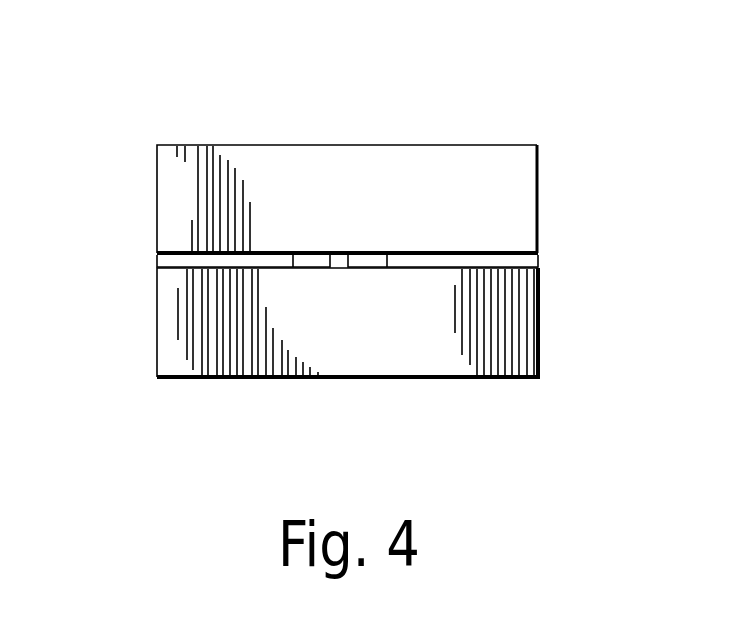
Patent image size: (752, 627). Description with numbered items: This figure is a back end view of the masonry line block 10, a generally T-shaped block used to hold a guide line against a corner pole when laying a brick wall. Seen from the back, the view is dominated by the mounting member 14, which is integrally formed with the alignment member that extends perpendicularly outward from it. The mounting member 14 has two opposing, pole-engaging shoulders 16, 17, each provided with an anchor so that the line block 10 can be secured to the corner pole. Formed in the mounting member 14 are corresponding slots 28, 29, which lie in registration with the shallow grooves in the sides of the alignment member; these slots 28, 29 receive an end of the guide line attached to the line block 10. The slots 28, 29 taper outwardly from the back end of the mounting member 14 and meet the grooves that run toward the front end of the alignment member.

The line block 10 is at (78, 87).
The mounting member 14 is at (344, 173).
The pole-engaging shoulder 16 is at (191, 181).
The pole-engaging shoulder 17 is at (509, 173).
The slot 28 is at (158, 266).
The slot 29 is at (530, 265).